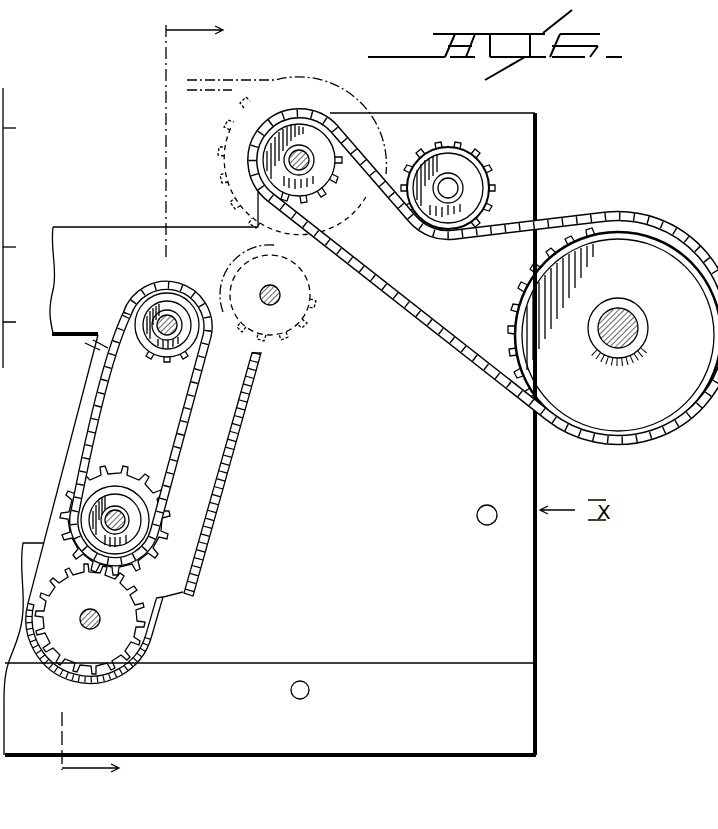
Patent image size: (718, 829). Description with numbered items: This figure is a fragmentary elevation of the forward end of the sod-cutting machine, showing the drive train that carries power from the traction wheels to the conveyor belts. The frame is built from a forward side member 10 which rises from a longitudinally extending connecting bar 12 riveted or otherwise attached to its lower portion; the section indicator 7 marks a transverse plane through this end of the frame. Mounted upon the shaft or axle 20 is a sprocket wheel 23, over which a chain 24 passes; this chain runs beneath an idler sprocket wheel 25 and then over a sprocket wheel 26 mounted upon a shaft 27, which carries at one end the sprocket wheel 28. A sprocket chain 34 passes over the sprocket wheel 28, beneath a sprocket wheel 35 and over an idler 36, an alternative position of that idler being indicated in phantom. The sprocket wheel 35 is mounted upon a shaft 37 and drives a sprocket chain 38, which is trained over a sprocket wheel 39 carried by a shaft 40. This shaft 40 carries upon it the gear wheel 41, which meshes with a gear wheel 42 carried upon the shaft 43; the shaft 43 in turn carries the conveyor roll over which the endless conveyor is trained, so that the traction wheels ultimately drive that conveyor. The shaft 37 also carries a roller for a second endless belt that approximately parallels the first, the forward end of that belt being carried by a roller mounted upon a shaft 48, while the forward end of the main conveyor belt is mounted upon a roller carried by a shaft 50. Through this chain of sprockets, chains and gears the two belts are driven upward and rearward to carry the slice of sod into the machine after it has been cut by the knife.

The section line 7- 7 is at (155, 404).
The forward side member 10 is at (515, 602).
The connecting bar 12 is at (401, 672).
The shaft or axle 20 is at (619, 318).
The sprocket wheel 23 is at (648, 400).
The chain 24 is at (447, 347).
The idler sprocket wheel 25 is at (480, 155).
The sprocket wheel 26 is at (297, 128).
The shaft 27 is at (305, 167).
The sprocket wheel 28 is at (184, 166).
The sprocket chain 34 is at (194, 168).
The sprocket wheel 35 is at (170, 304).
The idler 36 is at (298, 343).
The shaft 37 is at (128, 360).
The sprocket chain 38 is at (240, 431).
The sprocket wheel 39 is at (140, 525).
The shaft 40 is at (108, 516).
The gear wheel 41 is at (132, 476).
The gear wheel 42 is at (122, 617).
The shaft 43 is at (86, 624).
The shaft 48 is at (480, 523).
The shaft 50 is at (290, 688).